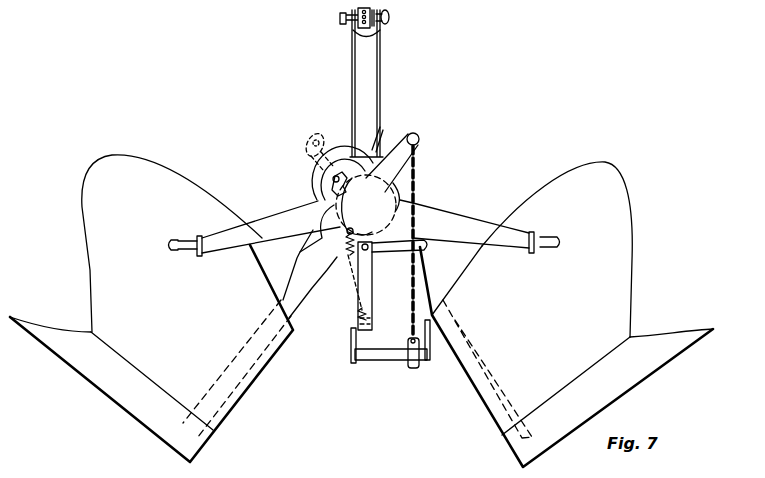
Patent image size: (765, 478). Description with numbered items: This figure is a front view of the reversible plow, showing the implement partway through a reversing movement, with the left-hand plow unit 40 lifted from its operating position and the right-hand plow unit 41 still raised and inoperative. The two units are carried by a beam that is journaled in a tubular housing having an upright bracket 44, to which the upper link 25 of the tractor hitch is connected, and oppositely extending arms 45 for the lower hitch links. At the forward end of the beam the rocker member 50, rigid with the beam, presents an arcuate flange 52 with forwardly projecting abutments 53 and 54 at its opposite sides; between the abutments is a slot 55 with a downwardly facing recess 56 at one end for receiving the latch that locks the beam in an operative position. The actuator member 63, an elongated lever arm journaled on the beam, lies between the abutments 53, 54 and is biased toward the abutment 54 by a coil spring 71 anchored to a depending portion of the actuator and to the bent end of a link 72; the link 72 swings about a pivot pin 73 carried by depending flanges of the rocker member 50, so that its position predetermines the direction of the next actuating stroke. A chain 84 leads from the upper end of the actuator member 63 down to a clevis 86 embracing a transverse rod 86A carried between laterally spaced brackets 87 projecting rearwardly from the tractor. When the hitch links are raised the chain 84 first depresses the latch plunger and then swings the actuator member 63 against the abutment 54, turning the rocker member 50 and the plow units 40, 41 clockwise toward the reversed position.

The upper link 25 is at (358, 30).
The upright bracket 44 is at (381, 62).
The rocker member 50 is at (335, 142).
The slot 55 is at (381, 127).
The actuator member 63 is at (420, 141).
The arcuate flange 52 is at (333, 177).
The recess 56 is at (325, 188).
The abutment 53 is at (325, 203).
The abutment 54 is at (425, 170).
The chain 84 is at (418, 200).
The left-hand plow unit 40 is at (80, 215).
The right-hand plow unit 41 is at (634, 243).
The arms 45 is at (492, 266).
The pivot pin 73 is at (372, 256).
The coil spring 71 is at (360, 313).
The link 72 is at (374, 300).
The brackets 87 is at (431, 340).
The transverse rod 86A is at (368, 362).
The clevis 86 is at (414, 370).